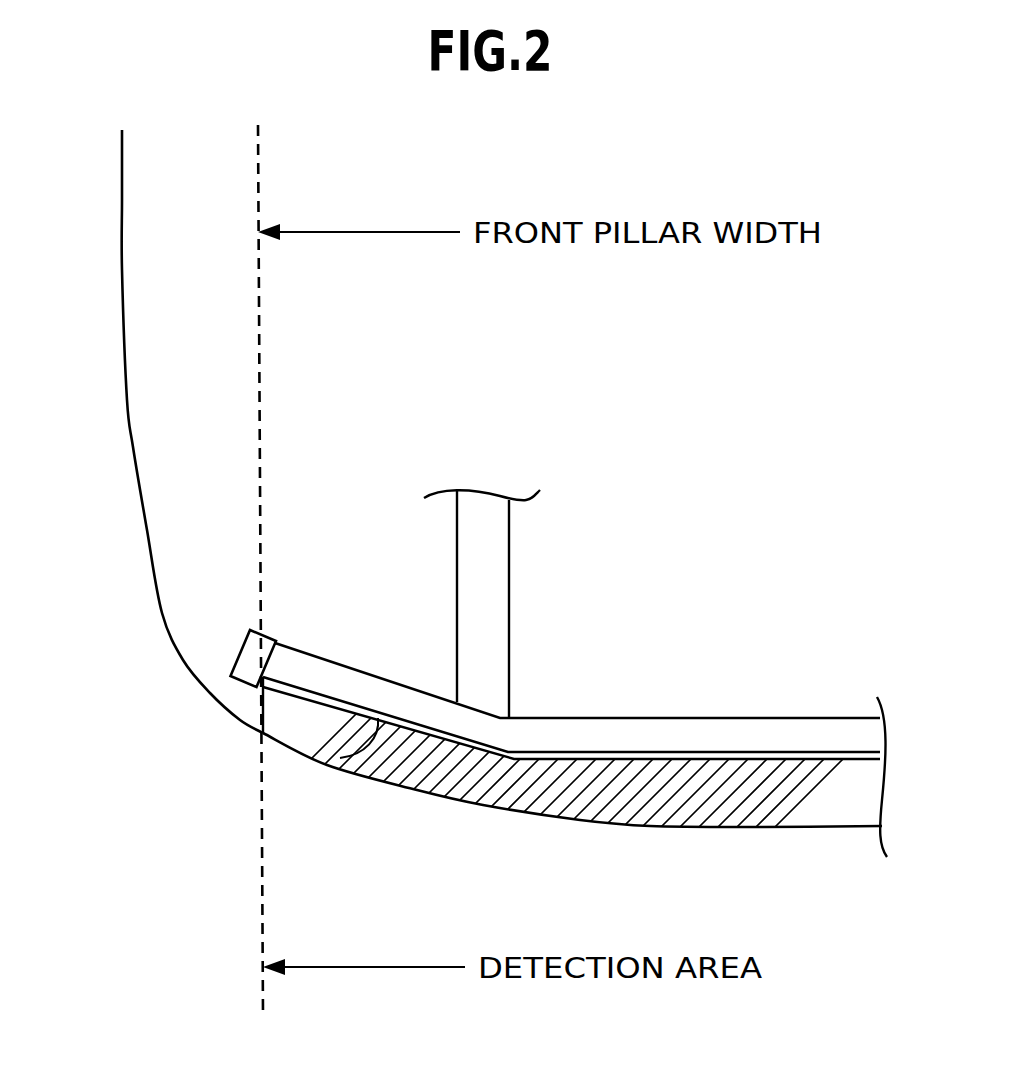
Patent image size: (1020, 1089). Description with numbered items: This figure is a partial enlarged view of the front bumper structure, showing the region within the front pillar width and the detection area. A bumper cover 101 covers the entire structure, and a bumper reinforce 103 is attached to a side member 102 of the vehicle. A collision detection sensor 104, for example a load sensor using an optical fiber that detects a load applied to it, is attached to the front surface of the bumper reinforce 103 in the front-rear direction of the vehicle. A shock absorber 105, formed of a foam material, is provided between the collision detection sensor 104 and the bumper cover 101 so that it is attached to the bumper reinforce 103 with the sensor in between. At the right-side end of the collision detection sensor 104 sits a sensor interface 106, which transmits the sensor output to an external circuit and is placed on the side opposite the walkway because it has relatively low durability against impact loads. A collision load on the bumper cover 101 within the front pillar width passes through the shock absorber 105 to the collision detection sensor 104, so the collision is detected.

The bumper cover 101 is at (478, 807).
The side member 102 is at (498, 558).
The bumper reinforce 103 is at (335, 673).
The collision detection sensor 104 is at (335, 759).
The shock absorber 105 is at (287, 717).
The sensor interface 106 is at (248, 636).